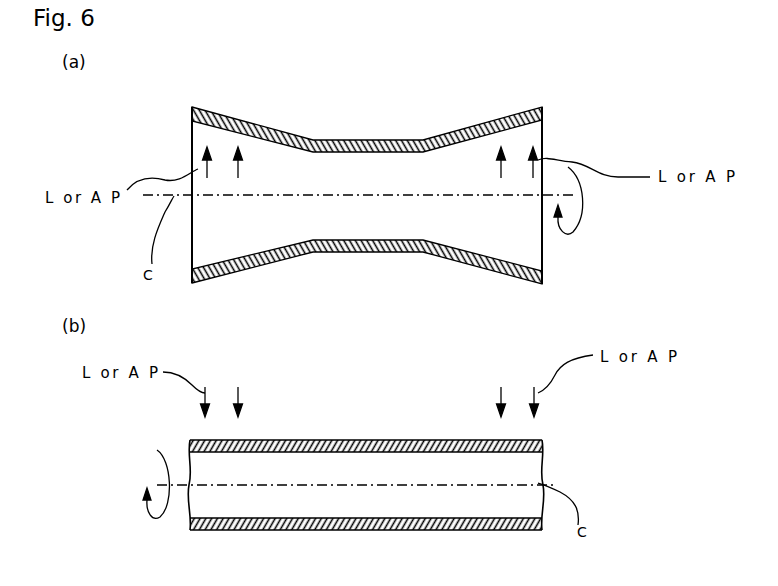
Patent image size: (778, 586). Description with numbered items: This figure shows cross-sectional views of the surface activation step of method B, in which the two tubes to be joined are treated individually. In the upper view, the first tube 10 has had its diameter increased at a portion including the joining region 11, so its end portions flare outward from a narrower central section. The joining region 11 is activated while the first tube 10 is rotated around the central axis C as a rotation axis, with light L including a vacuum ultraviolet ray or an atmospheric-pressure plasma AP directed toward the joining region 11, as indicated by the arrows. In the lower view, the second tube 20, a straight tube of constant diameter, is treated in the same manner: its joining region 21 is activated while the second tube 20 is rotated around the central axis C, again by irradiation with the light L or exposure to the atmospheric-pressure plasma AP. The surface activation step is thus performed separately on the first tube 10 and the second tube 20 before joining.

The first tube 10 is at (390, 140).
The joining region 11 is at (208, 125).
The second tube 20 is at (332, 440).
The joining region 21 is at (212, 438).